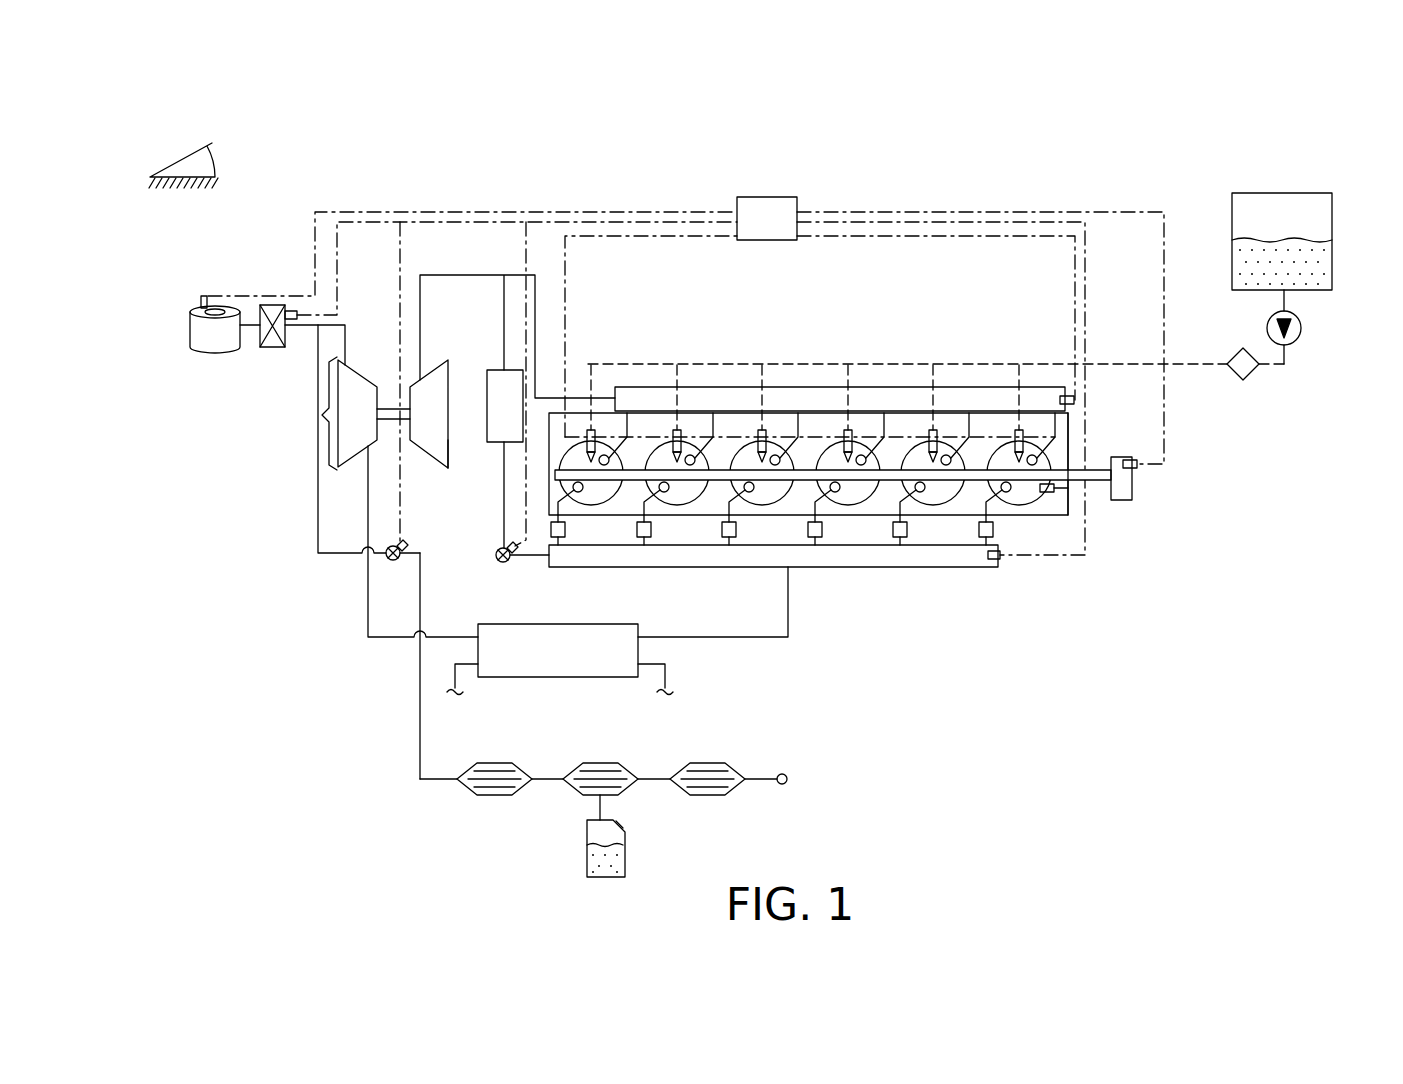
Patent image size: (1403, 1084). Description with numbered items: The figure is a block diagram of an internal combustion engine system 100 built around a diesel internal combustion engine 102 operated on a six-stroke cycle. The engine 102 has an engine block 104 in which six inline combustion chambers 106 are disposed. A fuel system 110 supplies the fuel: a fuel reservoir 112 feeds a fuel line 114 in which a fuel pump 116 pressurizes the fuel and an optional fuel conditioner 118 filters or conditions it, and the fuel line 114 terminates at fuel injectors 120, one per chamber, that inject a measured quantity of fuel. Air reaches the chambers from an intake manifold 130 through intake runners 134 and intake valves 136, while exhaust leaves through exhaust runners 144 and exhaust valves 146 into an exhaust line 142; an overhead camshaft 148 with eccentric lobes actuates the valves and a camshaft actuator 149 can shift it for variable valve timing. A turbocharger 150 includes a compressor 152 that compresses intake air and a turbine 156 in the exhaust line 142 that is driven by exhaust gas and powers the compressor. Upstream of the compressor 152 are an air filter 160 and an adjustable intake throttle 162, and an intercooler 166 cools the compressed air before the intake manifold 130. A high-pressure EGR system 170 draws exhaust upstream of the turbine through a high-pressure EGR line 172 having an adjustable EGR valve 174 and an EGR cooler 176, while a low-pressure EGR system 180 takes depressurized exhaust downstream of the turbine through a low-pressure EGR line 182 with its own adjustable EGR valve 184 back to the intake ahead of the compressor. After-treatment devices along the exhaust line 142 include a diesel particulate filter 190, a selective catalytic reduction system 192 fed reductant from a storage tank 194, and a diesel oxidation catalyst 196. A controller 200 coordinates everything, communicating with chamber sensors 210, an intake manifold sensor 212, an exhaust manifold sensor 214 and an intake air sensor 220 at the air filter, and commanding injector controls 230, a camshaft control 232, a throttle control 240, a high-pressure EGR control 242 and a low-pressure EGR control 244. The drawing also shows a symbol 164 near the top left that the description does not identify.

The internal combustion engine system 100 is at (340, 180).
The internal combustion engine 102 is at (678, 345).
The engine block 104 is at (1068, 512).
The combustion chambers 106 is at (938, 497).
The fuel system 110 is at (1353, 353).
The fuel reservoir 112 is at (1310, 217).
The fuel line 114 is at (1193, 364).
The fuel pump 116 is at (1302, 330).
The fuel conditioner 118 is at (1252, 378).
The fuel injectors 120 is at (800, 395).
The intake manifold 130 is at (940, 567).
The intake runners 134 is at (830, 480).
The intake valves 136 is at (845, 492).
The exhaust line 142 is at (572, 398).
The exhaust runners 144 is at (888, 437).
The exhaust valves 146 is at (875, 460).
The camshaft 148 is at (1090, 480).
The camshaft actuator 149 is at (1123, 490).
The turbocharger 150 is at (322, 415).
The compressor 152 is at (370, 380).
The turbine 156 is at (452, 443).
The air filter 160 is at (190, 330).
The intake throttle 162 is at (265, 347).
The ambient condition sensor 164 is at (178, 160).
The intercooler 166 is at (560, 677).
The high-pressure EGR system 170 is at (451, 362).
The high-pressure EGR line 172 is at (503, 300).
The adjustable EGR valve 174 is at (503, 565).
The EGR cooler 176 is at (487, 402).
The low-pressure EGR system 180 is at (455, 530).
The low-pressure EGR line 182 is at (320, 552).
The adjustable EGR valve 184 is at (390, 560).
The diesel particulate filter 190 is at (490, 796).
The selective catalytic reduction system 192 is at (600, 763).
The storage tank 194 is at (587, 852).
The diesel oxidation catalyst 196 is at (705, 796).
The controller 200 is at (752, 197).
The chamber sensors 210 is at (1047, 493).
The intake manifold sensor 212 is at (995, 560).
The exhaust manifold sensor 214 is at (1075, 404).
The intake air sensor 220 is at (204, 296).
The injector controls 230 is at (848, 430).
The camshaft control 232 is at (1138, 464).
The throttle control 240 is at (288, 310).
The high-pressure EGR control 242 is at (512, 558).
The low-pressure EGR control 244 is at (402, 545).